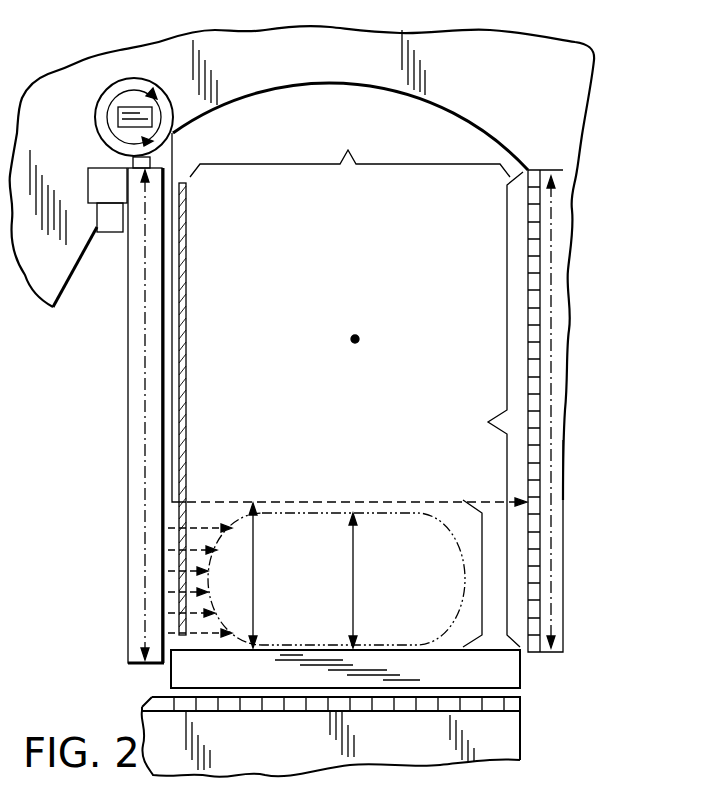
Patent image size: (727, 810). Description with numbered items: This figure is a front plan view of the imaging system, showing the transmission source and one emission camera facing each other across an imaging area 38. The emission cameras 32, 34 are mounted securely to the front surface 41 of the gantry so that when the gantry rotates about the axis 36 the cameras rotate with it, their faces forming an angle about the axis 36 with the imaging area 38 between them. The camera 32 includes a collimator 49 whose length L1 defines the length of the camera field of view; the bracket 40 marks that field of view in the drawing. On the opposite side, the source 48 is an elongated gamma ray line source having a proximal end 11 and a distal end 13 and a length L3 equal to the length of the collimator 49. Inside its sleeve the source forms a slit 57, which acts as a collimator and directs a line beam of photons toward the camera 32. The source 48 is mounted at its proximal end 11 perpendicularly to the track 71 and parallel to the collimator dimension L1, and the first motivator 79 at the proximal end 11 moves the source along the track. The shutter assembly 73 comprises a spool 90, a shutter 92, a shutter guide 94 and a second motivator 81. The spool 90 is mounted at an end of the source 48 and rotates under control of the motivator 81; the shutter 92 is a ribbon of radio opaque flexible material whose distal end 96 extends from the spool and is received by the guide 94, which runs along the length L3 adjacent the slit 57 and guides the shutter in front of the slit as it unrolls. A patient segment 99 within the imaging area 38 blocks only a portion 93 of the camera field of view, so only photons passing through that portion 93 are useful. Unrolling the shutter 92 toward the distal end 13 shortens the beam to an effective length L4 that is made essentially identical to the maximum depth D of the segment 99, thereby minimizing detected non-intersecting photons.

The proximal end 11 is at (156, 196).
The distal end 13 is at (133, 650).
The emission camera 32 is at (560, 172).
The emission camera 34 is at (440, 750).
The axis 36 is at (355, 339).
The imaging area 38 is at (350, 150).
The field of view bracket 40 is at (516, 213).
The front surface 41 is at (550, 76).
The source 48 is at (131, 380).
The collimator 49 is at (545, 655).
The slit 57 is at (166, 293).
The track 71 is at (112, 192).
The shutter assembly 73 is at (135, 105).
The first motivator 79 is at (98, 210).
The second motivator 81 is at (118, 116).
The spool 90 is at (100, 100).
The shutter 92 is at (174, 147).
The FOV portion 93 is at (483, 573).
The shutter guide 94 is at (186, 270).
The distal end 96 is at (170, 490).
The segment 99 is at (462, 612).
The length L1 is at (553, 264).
The length L3 is at (130, 420).
The effective length L4 is at (258, 575).
The maximum depth D is at (354, 580).